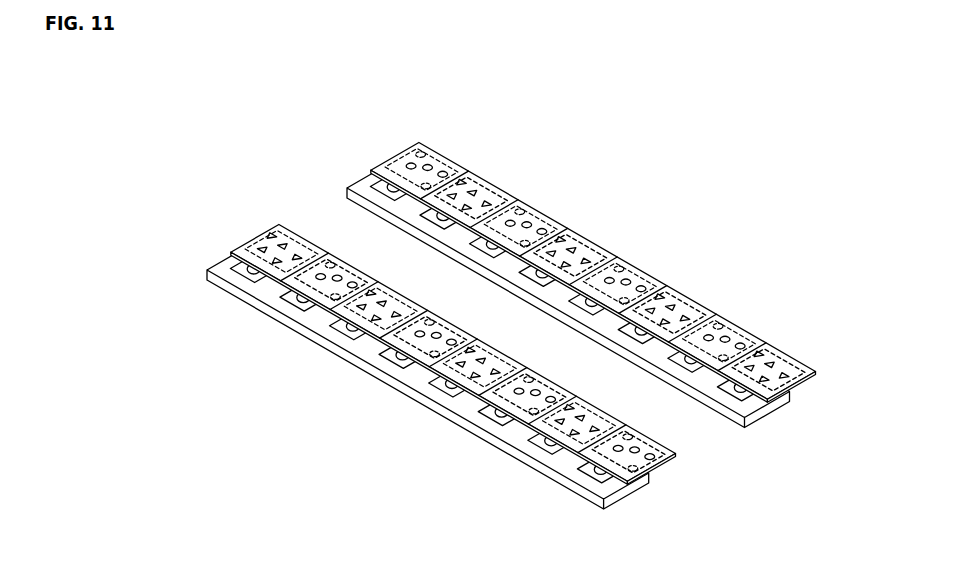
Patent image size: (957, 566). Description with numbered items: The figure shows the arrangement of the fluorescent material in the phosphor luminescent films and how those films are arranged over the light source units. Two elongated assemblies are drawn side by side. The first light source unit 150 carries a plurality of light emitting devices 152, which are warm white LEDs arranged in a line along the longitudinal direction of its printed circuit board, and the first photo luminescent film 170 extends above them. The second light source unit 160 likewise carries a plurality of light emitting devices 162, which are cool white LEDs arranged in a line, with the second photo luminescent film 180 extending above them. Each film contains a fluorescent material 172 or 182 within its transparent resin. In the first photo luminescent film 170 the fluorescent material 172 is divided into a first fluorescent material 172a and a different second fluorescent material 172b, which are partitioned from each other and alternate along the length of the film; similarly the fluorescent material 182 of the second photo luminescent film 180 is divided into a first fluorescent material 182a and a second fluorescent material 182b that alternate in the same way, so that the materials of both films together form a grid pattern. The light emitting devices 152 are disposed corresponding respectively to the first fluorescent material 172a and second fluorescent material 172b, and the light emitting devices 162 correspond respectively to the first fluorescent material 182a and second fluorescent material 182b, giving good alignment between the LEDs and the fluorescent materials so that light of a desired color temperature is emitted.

The first light source unit 150 is at (340, 181).
The light emitting devices 152 is at (383, 188).
The first photo luminescent film 170 is at (398, 150).
The fluorescent material 172 is at (595, 239).
The first fluorescent material 172a is at (422, 157).
The second fluorescent material 172b is at (619, 264).
The second light source unit 160 is at (200, 265).
The light emitting devices 162 is at (233, 272).
The second photo luminescent film 180 is at (257, 231).
The fluorescent material 182 is at (413, 351).
The first fluorescent material 182a is at (328, 290).
The second fluorescent material 182b is at (301, 261).